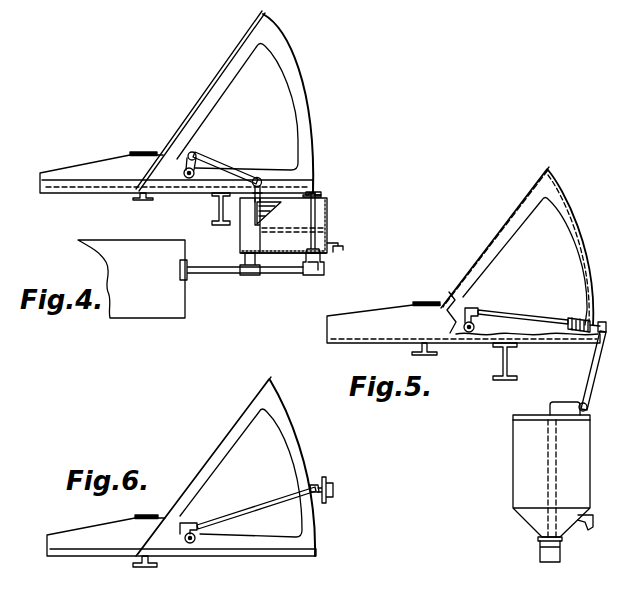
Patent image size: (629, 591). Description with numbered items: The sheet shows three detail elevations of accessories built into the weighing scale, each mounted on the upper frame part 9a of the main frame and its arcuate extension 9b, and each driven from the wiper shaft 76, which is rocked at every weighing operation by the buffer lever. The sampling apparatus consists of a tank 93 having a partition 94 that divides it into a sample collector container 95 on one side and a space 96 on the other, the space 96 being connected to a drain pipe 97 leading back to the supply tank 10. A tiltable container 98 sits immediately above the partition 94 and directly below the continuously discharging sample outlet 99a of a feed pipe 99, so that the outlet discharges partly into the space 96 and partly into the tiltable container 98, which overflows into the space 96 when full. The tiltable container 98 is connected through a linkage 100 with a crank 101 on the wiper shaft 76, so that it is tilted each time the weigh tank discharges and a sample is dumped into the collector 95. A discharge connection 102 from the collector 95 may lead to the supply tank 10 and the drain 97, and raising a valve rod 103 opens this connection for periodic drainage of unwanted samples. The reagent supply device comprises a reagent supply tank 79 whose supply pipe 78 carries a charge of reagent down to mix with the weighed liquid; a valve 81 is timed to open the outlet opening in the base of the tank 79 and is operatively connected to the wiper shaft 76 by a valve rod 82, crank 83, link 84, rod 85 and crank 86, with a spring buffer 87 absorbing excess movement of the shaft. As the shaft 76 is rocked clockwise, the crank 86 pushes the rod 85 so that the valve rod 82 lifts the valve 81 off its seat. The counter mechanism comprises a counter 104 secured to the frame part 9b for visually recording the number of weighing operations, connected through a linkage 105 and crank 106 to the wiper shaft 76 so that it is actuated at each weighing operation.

In FIG. 4, the upper frame part 9a is at (84, 164).
In FIG. 5, the upper frame part 9a is at (382, 314).
In FIG. 6, the upper frame part 9a is at (72, 538).
In FIG. 4, the arcuate extension 9b is at (308, 95).
In FIG. 5, the arcuate extension 9b is at (569, 200).
In FIG. 6, the arcuate extension 9b is at (301, 442).
In FIG. 4, the supply tank 10 is at (146, 306).
In FIG. 4, the wiper shaft 76 is at (188, 179).
In FIG. 5, the wiper shaft 76 is at (468, 333).
In FIG. 6, the wiper shaft 76 is at (195, 543).
In FIG. 5, the supply pipe 78 is at (552, 553).
In FIG. 5, the reagent supply tank 79 is at (576, 442).
In FIG. 5, the valve 81 is at (540, 545).
In FIG. 5, the valve rod 82 is at (547, 442).
In FIG. 5, the crank 83 is at (565, 404).
In FIG. 5, the link 84 is at (589, 377).
In FIG. 5, the rod 85 is at (531, 320).
In FIG. 5, the crank 86 is at (466, 315).
In FIG. 5, the spring buffer 87 is at (577, 324).
In FIG. 4, the tank 93 is at (279, 255).
In FIG. 4, the partition 94 is at (259, 238).
In FIG. 4, the sample collector container 95 is at (304, 235).
In FIG. 4, the space 96 is at (242, 228).
In FIG. 4, the drain pipe 97 is at (217, 274).
In FIG. 4, the tiltable container 98 is at (270, 209).
In FIG. 4, the feed pipe 99 is at (119, 180).
In FIG. 4, the sample outlet 99a is at (264, 180).
In FIG. 4, the linkage 100 is at (216, 162).
In FIG. 4, the crank 101 is at (178, 160).
In FIG. 4, the discharge connection 102 is at (325, 267).
In FIG. 4, the valve rod 103 is at (322, 215).
In FIG. 6, the counter 104 is at (333, 486).
In FIG. 6, the linkage 105 is at (247, 507).
In FIG. 6, the crank 106 is at (183, 534).